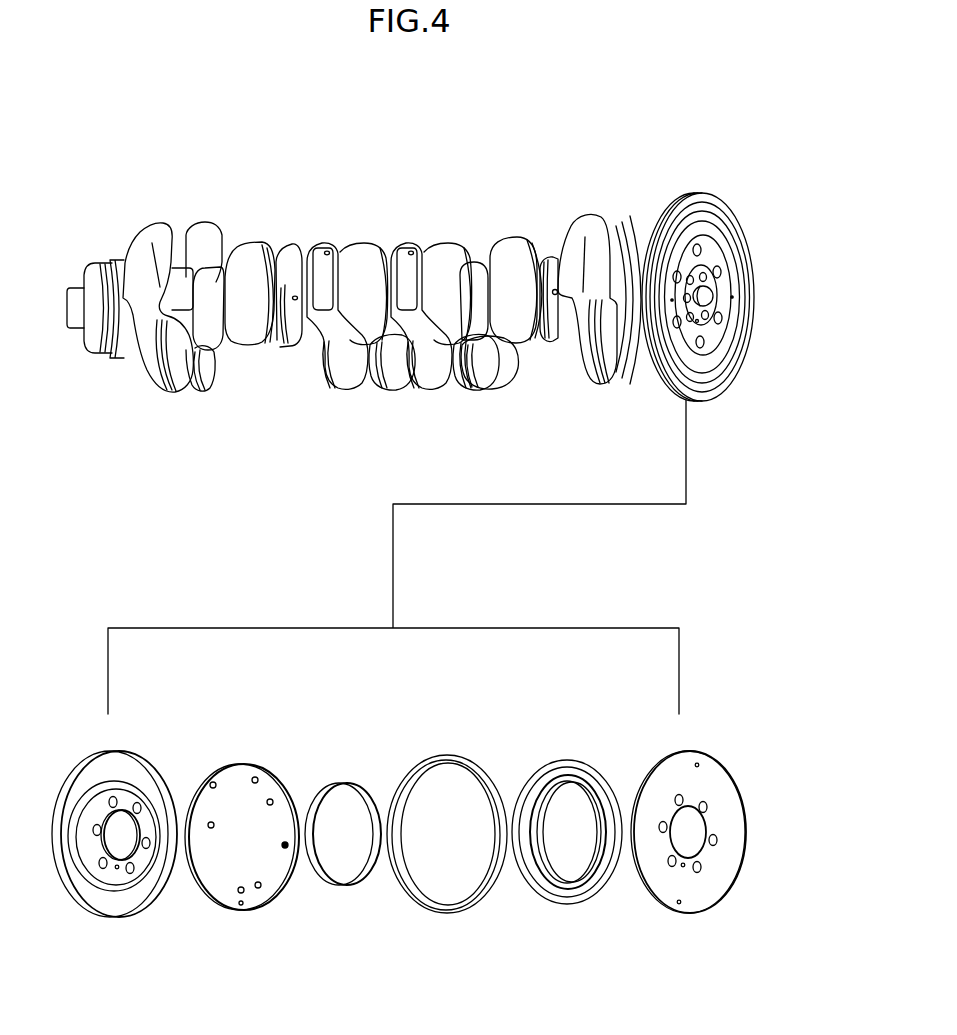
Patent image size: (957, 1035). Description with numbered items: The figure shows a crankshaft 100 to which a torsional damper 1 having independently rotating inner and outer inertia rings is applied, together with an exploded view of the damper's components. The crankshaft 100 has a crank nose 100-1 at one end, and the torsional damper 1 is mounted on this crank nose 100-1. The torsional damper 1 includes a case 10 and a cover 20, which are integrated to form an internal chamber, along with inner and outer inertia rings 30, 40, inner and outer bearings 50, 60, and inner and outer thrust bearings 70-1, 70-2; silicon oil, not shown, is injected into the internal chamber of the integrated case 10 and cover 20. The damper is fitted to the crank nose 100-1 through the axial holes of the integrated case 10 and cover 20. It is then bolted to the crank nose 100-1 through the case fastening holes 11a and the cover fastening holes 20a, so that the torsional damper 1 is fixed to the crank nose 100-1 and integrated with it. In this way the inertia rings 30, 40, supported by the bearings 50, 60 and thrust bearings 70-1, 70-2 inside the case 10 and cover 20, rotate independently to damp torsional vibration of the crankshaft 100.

The torsional damper 1 is at (677, 192).
The crankshaft 100 is at (253, 248).
The crank nose 100-1 is at (707, 270).
The case 10 is at (117, 897).
The case fastening holes 11a is at (102, 872).
The cover 20 is at (691, 903).
The cover fastening holes 20a is at (712, 843).
The inner inertia ring 30 is at (572, 902).
The outer inertia ring 40 is at (455, 910).
The inner bearing 50 is at (347, 885).
The outer bearing 60 is at (225, 907).
The inner thrust bearing 70-1 is at (260, 885).
The outer thrust bearing 70-2 is at (241, 903).